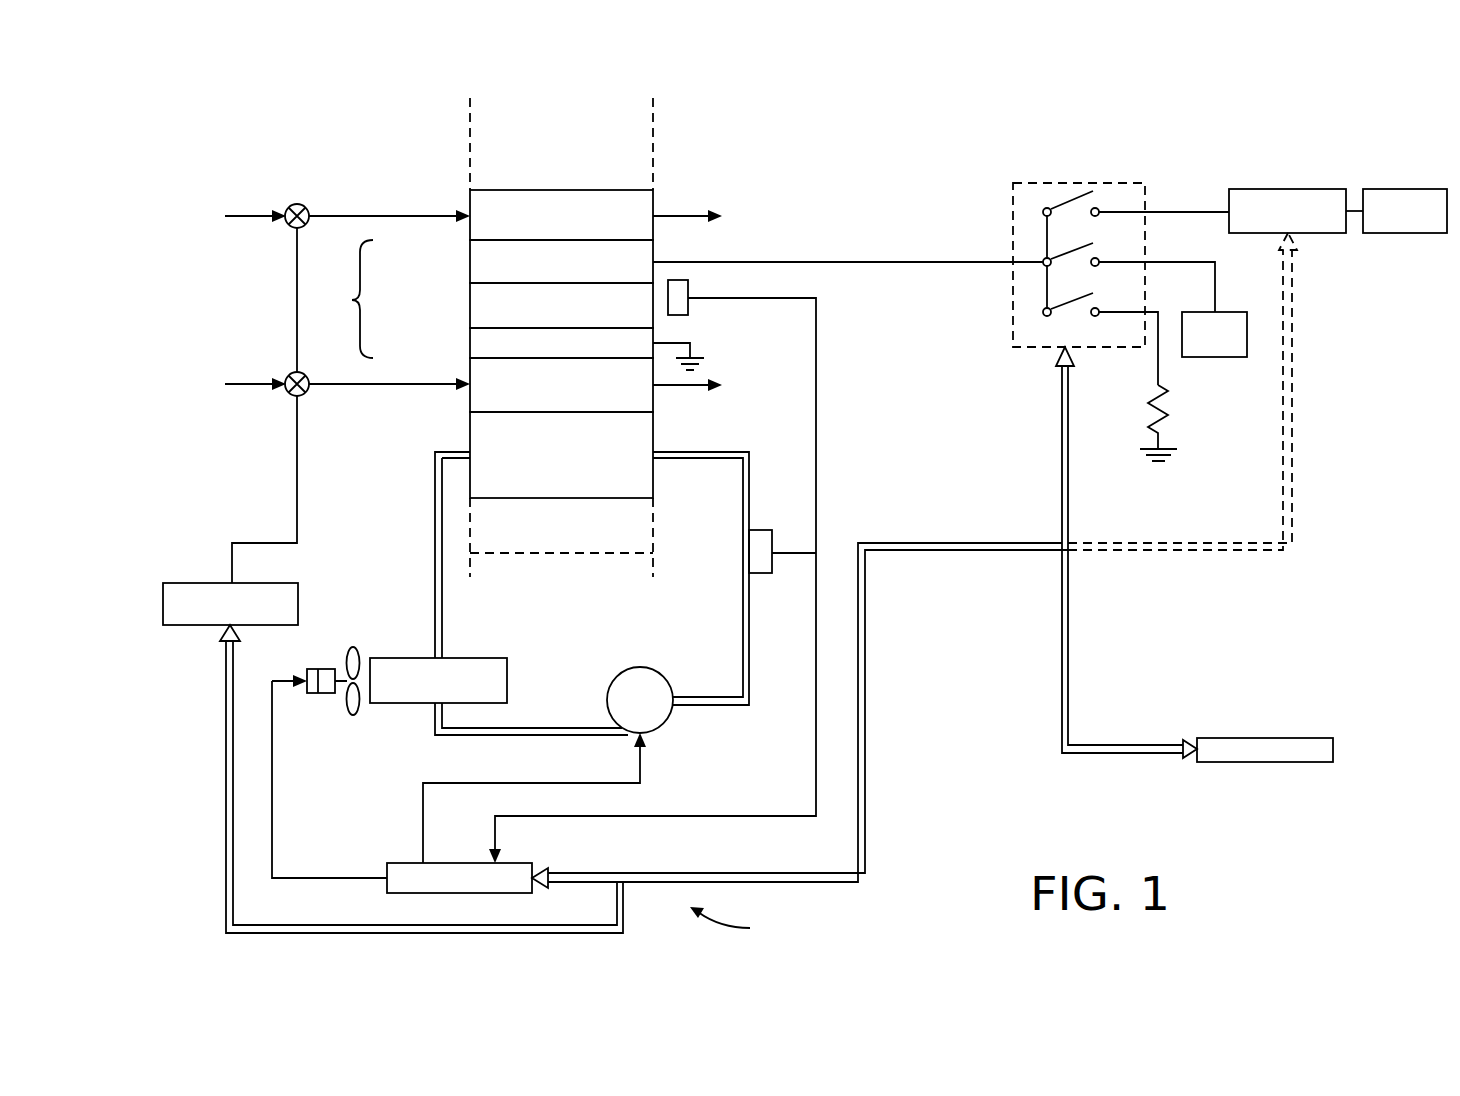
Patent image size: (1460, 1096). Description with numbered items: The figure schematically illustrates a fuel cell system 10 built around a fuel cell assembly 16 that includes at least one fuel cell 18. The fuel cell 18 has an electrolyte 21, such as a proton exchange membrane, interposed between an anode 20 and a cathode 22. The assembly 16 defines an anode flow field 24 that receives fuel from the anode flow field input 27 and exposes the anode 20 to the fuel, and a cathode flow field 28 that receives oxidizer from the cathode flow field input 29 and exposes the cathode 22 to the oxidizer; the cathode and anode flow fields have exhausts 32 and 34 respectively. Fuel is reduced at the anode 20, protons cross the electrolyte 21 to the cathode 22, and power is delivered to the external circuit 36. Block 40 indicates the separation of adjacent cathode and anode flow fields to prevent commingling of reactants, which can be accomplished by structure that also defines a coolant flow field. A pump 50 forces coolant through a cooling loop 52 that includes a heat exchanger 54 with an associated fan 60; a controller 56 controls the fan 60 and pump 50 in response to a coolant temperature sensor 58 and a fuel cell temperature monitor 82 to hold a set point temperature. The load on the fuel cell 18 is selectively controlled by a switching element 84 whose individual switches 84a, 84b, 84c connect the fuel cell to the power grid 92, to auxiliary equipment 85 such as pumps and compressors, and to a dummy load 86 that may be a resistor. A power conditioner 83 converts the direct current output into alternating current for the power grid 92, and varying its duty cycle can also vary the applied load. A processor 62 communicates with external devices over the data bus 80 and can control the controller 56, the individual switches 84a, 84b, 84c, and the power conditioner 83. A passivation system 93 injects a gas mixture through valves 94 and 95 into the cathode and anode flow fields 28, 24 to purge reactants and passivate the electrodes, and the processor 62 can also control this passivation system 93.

The fuel cell system 10 is at (739, 925).
The fuel cell assembly 16 is at (425, 125).
The fuel cell 18 is at (345, 299).
The anode 20 is at (470, 261).
The electrolyte 21 is at (470, 300).
The cathode 22 is at (470, 344).
The anode flow field 24 is at (656, 204).
The anode flow field input 27 is at (402, 216).
The cathode flow field 28 is at (655, 410).
The cathode flow field input 29 is at (373, 383).
The cathode flow field exhaust 32 is at (685, 388).
The anode flow field exhaust 34 is at (688, 215).
The external circuit 36 is at (781, 262).
The anode-cathode separation block 40 is at (655, 150).
The pump 50 is at (640, 667).
The cooling loop 52 is at (750, 495).
The heat exchanger 54 is at (397, 658).
The controller 56 is at (416, 863).
The coolant temperature sensor 58 is at (772, 563).
The fan 60 is at (323, 669).
The processor 62 is at (1243, 738).
The data bus 80 is at (865, 812).
The fuel cell temperature monitor 82 is at (688, 312).
The power conditioner 83 is at (1270, 189).
The switching element 84 is at (1097, 182).
The individual switch 84a is at (1075, 202).
The individual switch 84b is at (1068, 252).
The individual switch 84c is at (1065, 307).
The auxiliary equipment 85 is at (1222, 312).
The dummy load 86 is at (1148, 400).
The power grid 92 is at (1410, 189).
The passivation system 93 is at (212, 583).
The valve 94 is at (295, 372).
The valve 95 is at (295, 203).